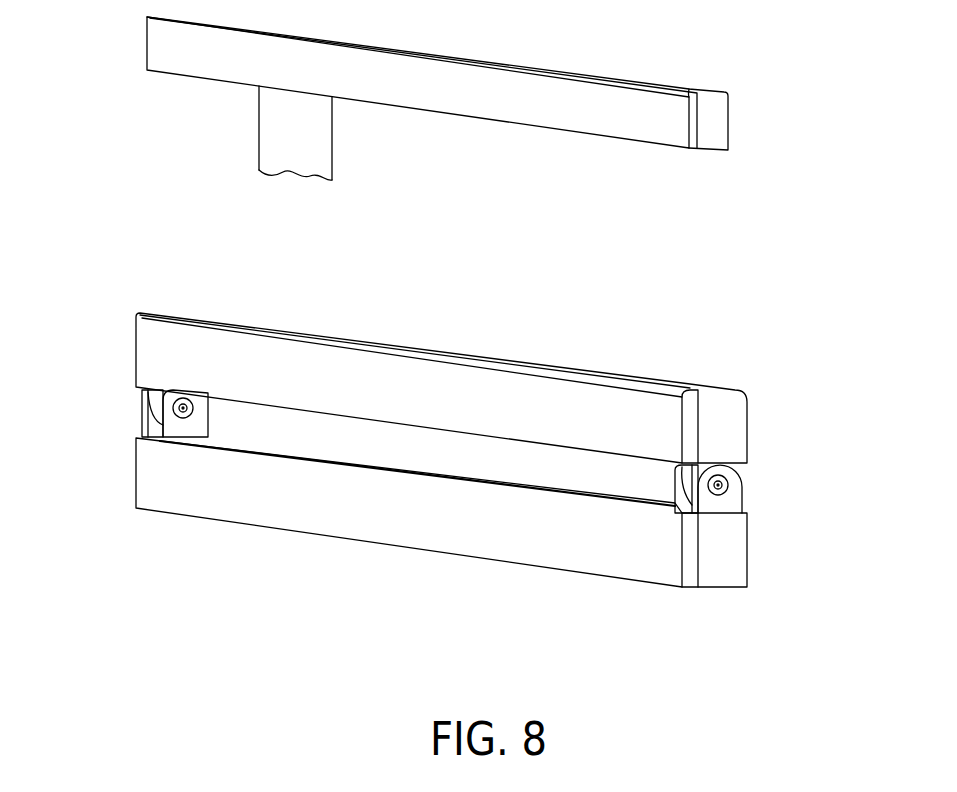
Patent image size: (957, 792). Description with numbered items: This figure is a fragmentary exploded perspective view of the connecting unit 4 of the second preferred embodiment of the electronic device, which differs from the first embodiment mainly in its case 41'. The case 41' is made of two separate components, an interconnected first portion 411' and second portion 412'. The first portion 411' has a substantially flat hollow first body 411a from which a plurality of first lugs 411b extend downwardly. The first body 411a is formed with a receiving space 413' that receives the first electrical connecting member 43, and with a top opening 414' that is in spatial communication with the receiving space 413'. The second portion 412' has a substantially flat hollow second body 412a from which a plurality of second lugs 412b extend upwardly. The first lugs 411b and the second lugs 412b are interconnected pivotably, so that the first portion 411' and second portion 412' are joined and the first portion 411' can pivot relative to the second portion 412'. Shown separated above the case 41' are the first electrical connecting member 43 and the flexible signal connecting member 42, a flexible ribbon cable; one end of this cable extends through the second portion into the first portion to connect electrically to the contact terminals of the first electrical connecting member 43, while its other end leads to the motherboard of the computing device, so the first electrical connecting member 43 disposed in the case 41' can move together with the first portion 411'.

The connecting unit 4 is at (786, 364).
The case 41' is at (461, 436).
The first portion 411' is at (444, 374).
The first body 411a is at (148, 343).
The first lugs 411b is at (147, 397).
The second portion 412' is at (444, 488).
The second body 412a is at (157, 475).
The second lugs 412b is at (146, 427).
The receiving space 413' is at (463, 330).
The top opening 414' is at (681, 333).
The flexible signal connecting member 42 is at (318, 163).
The first electrical connecting member 43 is at (733, 118).